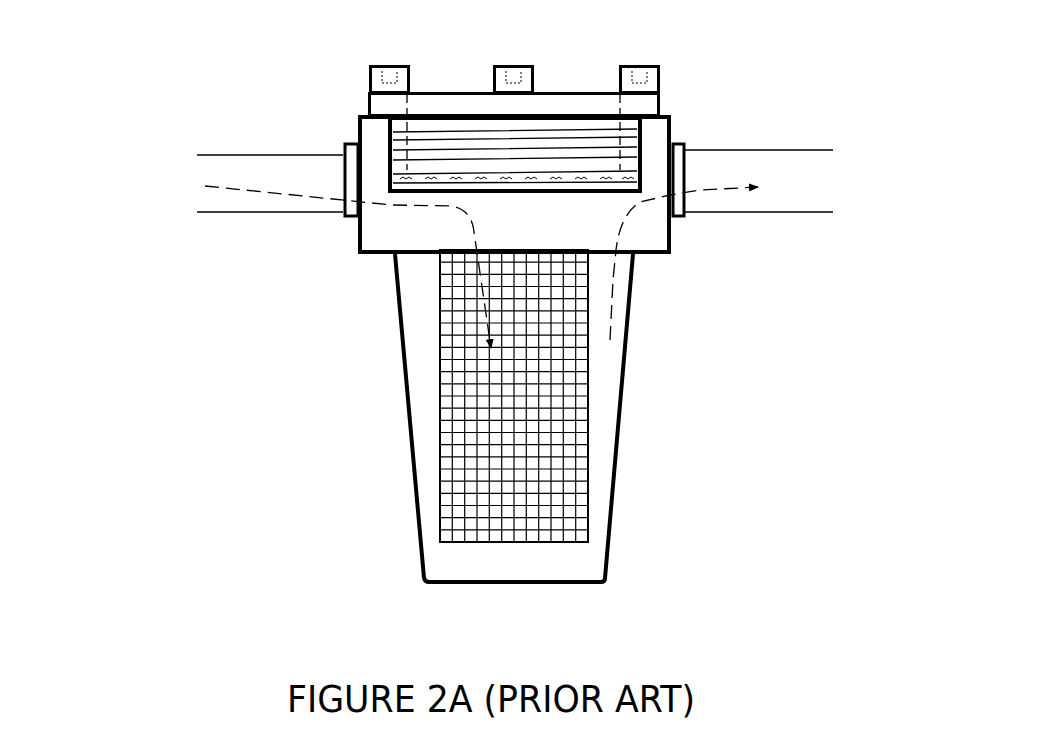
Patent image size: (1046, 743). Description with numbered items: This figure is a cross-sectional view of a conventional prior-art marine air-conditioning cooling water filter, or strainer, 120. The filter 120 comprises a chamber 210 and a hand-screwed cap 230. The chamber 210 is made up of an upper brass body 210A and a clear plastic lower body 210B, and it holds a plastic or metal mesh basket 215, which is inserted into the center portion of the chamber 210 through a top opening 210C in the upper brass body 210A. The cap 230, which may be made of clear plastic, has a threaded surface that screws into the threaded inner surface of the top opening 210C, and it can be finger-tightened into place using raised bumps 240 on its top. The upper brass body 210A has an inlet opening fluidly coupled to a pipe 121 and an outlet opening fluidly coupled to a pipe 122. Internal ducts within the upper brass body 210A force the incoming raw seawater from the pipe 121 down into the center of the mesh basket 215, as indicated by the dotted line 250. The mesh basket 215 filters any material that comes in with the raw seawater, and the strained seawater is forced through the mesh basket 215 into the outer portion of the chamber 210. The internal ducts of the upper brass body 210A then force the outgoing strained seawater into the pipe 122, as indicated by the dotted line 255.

The marine A/C cooling water filter 120 is at (250, 380).
The pipe 121 is at (213, 156).
The pipe 122 is at (805, 149).
The chamber 210 is at (539, 349).
The upper brass body 210A is at (668, 238).
The lower body 210B is at (623, 375).
The top opening 210C is at (497, 195).
The mesh basket 215 is at (440, 432).
The cap 230 is at (552, 94).
The raised bumps 240 is at (527, 65).
The dotted line 250 is at (247, 188).
The dotted line 255 is at (615, 310).